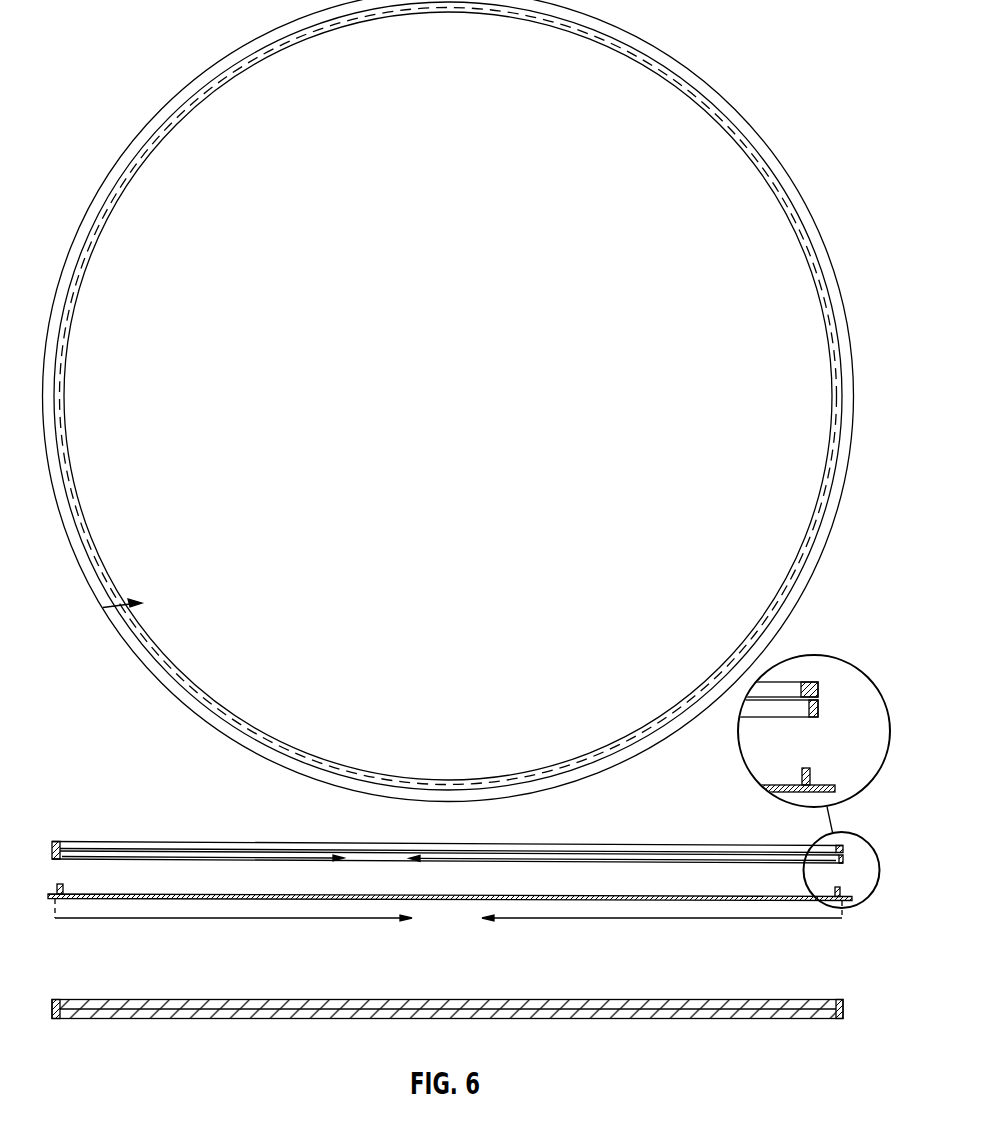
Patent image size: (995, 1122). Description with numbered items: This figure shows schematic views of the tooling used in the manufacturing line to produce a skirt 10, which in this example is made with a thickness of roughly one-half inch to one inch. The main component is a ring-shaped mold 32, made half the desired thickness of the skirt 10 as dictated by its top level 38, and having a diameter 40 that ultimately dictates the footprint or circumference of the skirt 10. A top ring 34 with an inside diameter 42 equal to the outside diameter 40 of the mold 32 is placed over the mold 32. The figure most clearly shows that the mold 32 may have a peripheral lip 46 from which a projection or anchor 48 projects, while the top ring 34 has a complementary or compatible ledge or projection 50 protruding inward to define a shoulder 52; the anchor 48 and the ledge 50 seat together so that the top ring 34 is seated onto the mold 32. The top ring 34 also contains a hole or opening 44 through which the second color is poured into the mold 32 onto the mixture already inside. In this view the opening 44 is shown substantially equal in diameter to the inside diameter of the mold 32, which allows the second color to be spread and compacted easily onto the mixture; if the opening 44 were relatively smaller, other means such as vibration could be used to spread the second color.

The skirt 10 is at (258, 1000).
The mold 32 is at (456, 620).
The top ring 34 is at (782, 596).
The top level 38 is at (74, 885).
The diameter 40 is at (448, 916).
The inside diameter 42 is at (449, 868).
The opening 44 is at (104, 607).
The peripheral lip 46 is at (830, 783).
The anchor 48 is at (811, 773).
The ledge 50 is at (818, 706).
The shoulder 52 is at (809, 703).